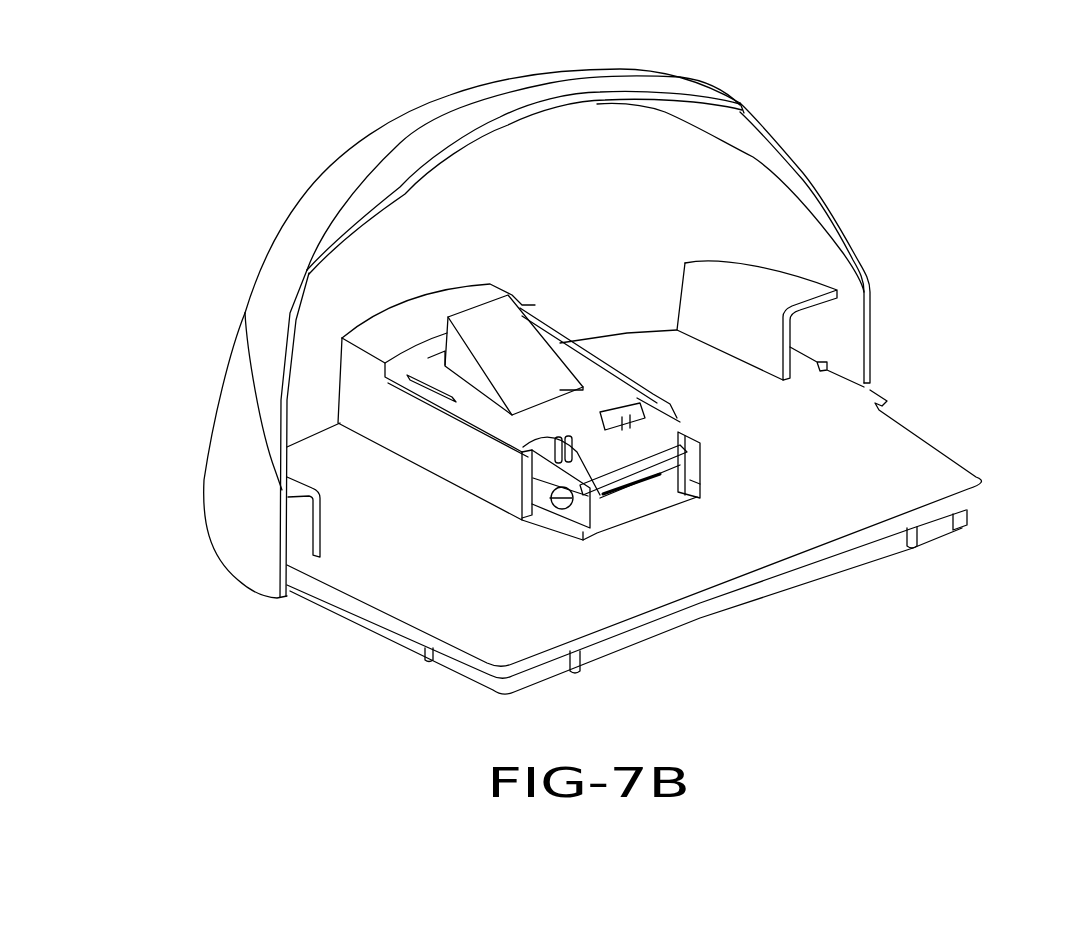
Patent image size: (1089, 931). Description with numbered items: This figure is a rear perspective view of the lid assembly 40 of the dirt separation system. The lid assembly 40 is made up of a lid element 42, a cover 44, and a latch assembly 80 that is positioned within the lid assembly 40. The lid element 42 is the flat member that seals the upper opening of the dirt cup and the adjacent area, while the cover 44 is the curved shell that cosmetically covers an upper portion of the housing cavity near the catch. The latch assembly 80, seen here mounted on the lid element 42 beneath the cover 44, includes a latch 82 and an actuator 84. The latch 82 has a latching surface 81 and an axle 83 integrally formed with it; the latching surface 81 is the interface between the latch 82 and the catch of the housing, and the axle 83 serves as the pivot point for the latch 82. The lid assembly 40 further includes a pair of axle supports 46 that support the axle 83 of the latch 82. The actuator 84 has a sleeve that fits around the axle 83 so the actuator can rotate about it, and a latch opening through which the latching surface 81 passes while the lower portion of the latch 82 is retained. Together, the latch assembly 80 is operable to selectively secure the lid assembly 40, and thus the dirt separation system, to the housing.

The lid assembly 40 is at (945, 282).
The lid element 42 is at (963, 477).
The cover 44 is at (307, 207).
The axle supports 46 is at (692, 440).
The latch assembly 80 is at (538, 234).
The latching surface 81 is at (512, 310).
The latch 82 is at (538, 357).
The axle 83 is at (667, 465).
The actuator 84 is at (603, 400).